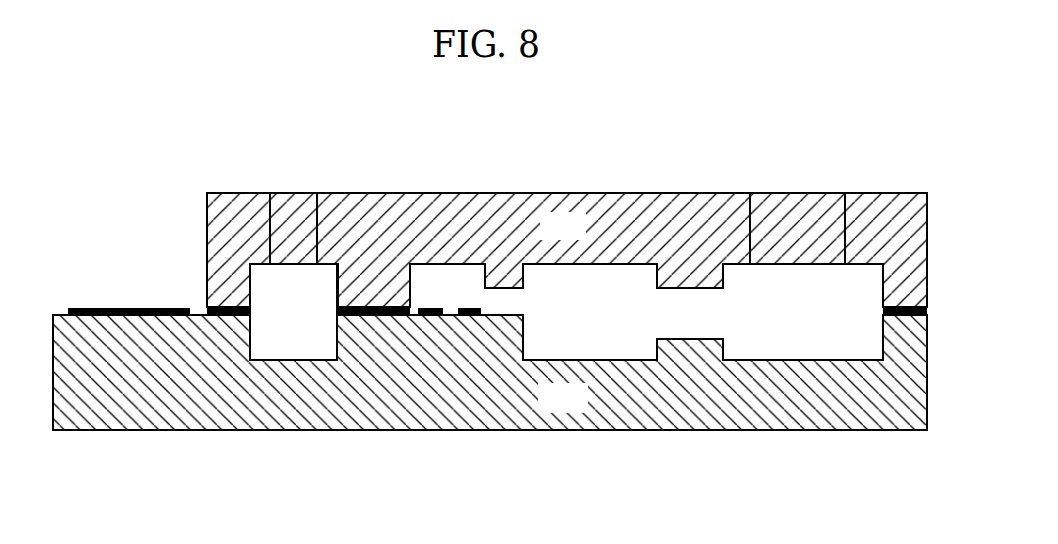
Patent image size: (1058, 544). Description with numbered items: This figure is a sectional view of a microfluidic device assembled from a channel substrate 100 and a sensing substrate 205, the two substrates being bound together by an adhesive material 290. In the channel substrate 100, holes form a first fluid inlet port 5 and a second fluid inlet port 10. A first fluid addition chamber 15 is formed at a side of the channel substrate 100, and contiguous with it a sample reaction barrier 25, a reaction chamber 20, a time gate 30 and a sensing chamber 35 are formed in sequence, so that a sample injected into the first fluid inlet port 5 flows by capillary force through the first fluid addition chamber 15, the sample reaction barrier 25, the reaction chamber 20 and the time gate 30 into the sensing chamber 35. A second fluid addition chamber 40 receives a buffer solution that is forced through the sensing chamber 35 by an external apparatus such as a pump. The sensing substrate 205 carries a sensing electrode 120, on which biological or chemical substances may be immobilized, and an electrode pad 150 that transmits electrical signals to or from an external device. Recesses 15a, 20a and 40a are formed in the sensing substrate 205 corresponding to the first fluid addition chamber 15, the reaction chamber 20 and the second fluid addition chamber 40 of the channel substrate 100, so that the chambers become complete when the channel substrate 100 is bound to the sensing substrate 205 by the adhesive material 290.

The first fluid inlet port 5 is at (797, 203).
The second fluid inlet port 10 is at (295, 203).
The first fluid addition chamber 15 is at (870, 264).
The recess 15a is at (797, 360).
The reaction chamber 20 is at (625, 264).
The recess 20a is at (598, 360).
The sample reaction barrier 25 is at (688, 288).
The time gate 30 is at (500, 312).
The sensing chamber 35 is at (418, 312).
The second fluid addition chamber 40 is at (250, 288).
The recess 40a is at (249, 350).
The channel substrate 100 is at (541, 238).
The sensing electrode 120 is at (434, 307).
The electrode pad 150 is at (130, 307).
The sensing substrate 205 is at (540, 411).
The adhesive material 290 is at (232, 307).